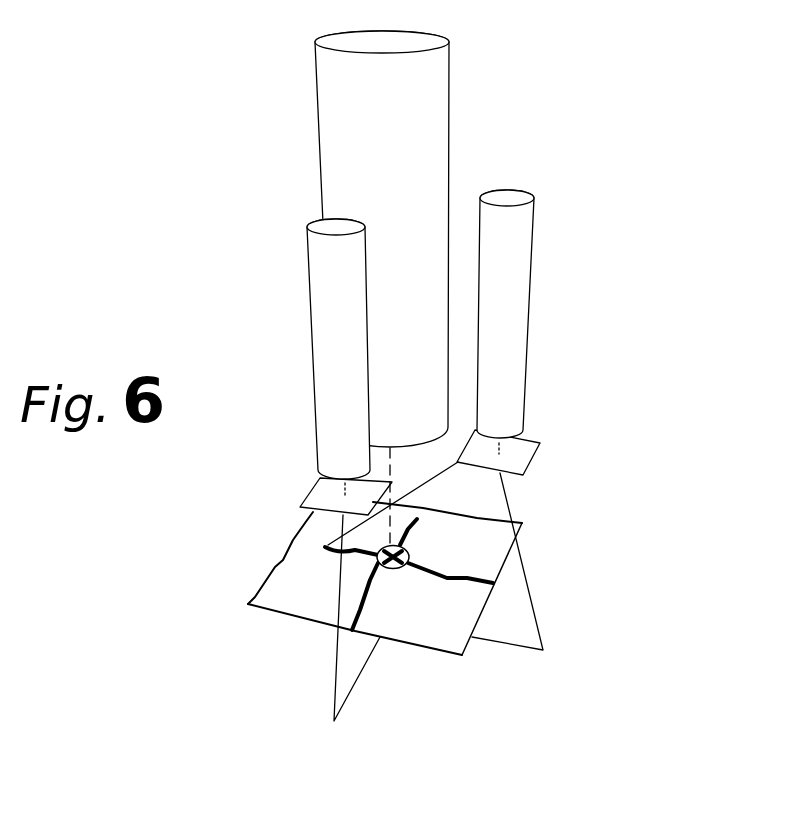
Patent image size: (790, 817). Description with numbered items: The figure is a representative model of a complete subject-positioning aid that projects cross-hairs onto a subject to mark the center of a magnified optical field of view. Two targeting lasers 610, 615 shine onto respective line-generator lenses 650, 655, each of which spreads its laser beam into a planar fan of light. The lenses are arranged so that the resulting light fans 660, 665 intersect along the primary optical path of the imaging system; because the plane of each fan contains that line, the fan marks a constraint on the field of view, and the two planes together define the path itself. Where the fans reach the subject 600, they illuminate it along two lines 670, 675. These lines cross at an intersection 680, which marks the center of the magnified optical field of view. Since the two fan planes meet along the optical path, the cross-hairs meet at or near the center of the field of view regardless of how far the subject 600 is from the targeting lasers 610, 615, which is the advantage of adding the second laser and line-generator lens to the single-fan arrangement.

The subject 600 is at (248, 604).
The targeting laser 610 is at (543, 193).
The targeting laser 615 is at (300, 264).
The line-generator lens 650 is at (545, 465).
The line-generator lens 655 is at (296, 497).
The light fan 660 is at (540, 590).
The light fan 665 is at (326, 692).
The illuminated line 670 is at (325, 550).
The illuminated line 675 is at (366, 612).
The intersection of the lines 680 is at (410, 550).